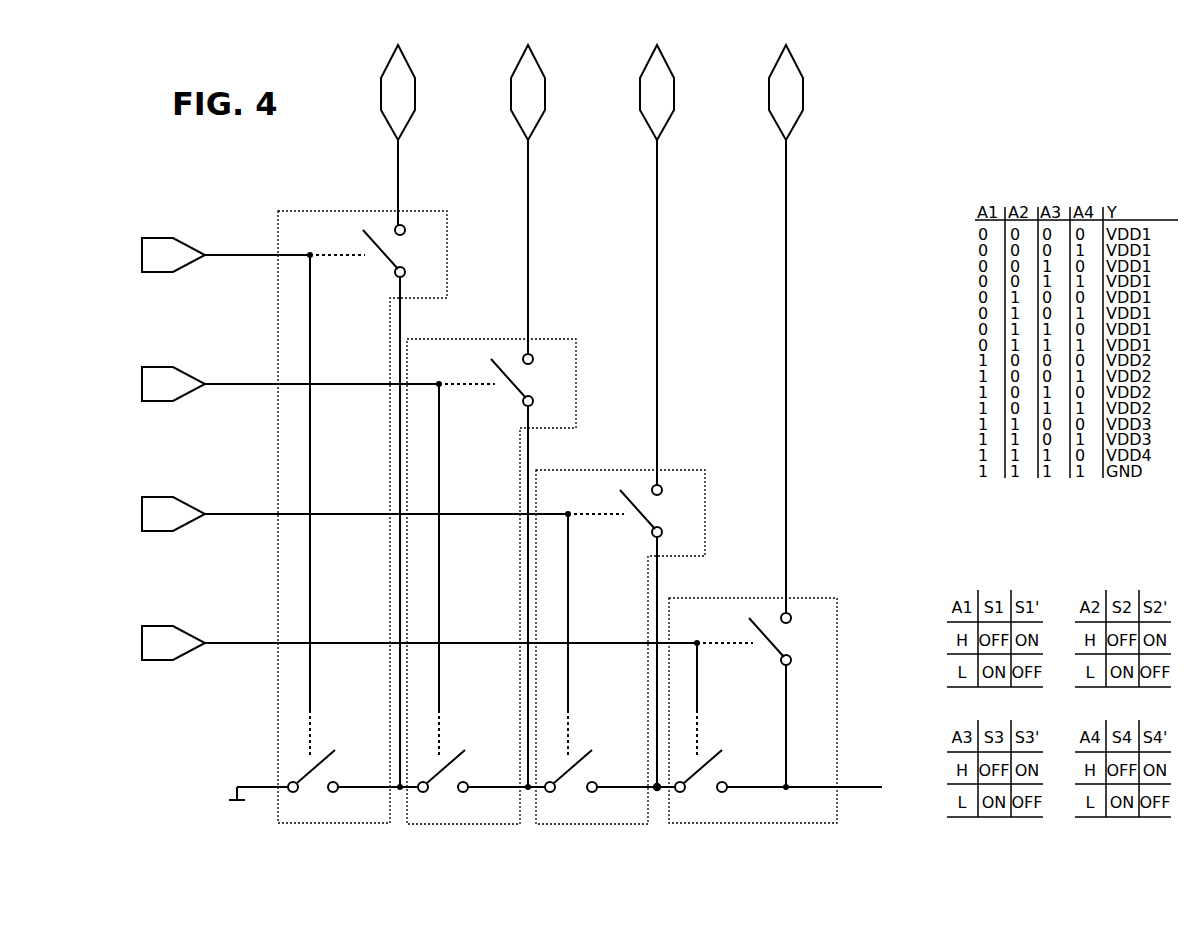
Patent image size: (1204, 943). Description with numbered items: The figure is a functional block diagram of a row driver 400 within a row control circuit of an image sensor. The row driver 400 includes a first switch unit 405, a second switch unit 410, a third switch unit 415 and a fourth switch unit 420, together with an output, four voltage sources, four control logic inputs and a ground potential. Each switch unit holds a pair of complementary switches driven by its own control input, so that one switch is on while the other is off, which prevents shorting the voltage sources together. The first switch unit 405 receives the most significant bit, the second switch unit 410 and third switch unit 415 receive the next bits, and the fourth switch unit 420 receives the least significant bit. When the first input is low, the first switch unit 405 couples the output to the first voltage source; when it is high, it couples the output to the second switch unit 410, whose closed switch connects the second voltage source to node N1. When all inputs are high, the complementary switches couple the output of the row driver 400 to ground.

The row driver 400 is at (918, 134).
The first switch unit 405 is at (834, 598).
The second switch unit 410 is at (700, 470).
The third switch unit 415 is at (567, 339).
The fourth switch unit 420 is at (430, 211).
The node N1 is at (658, 794).